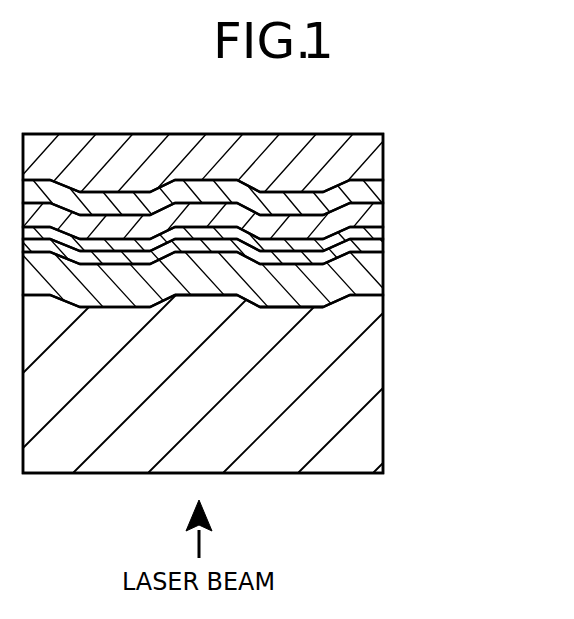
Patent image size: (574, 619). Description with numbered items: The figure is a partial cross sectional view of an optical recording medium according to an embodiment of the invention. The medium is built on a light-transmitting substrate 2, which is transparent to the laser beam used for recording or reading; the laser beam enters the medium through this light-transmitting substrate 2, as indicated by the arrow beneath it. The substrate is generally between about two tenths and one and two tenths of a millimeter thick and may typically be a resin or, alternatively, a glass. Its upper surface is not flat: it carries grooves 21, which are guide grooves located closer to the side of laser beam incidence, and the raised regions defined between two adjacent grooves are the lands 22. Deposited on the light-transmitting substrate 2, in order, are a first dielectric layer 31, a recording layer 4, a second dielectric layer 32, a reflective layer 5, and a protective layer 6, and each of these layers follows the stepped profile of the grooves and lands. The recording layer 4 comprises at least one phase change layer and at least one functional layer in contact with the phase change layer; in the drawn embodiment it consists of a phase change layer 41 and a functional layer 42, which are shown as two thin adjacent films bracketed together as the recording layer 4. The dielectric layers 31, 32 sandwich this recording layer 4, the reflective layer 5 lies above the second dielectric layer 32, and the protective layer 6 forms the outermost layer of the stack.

The light-transmitting substrate 2 is at (383, 375).
The groove 21 is at (282, 306).
The land 22 is at (202, 294).
The first dielectric layer 31 is at (383, 264).
The second dielectric layer 32 is at (383, 210).
The recording layer 4 is at (520, 238).
The phase change layer 41 is at (383, 243).
The functional layer 42 is at (383, 233).
The reflective layer 5 is at (383, 188).
The protective layer 6 is at (383, 150).